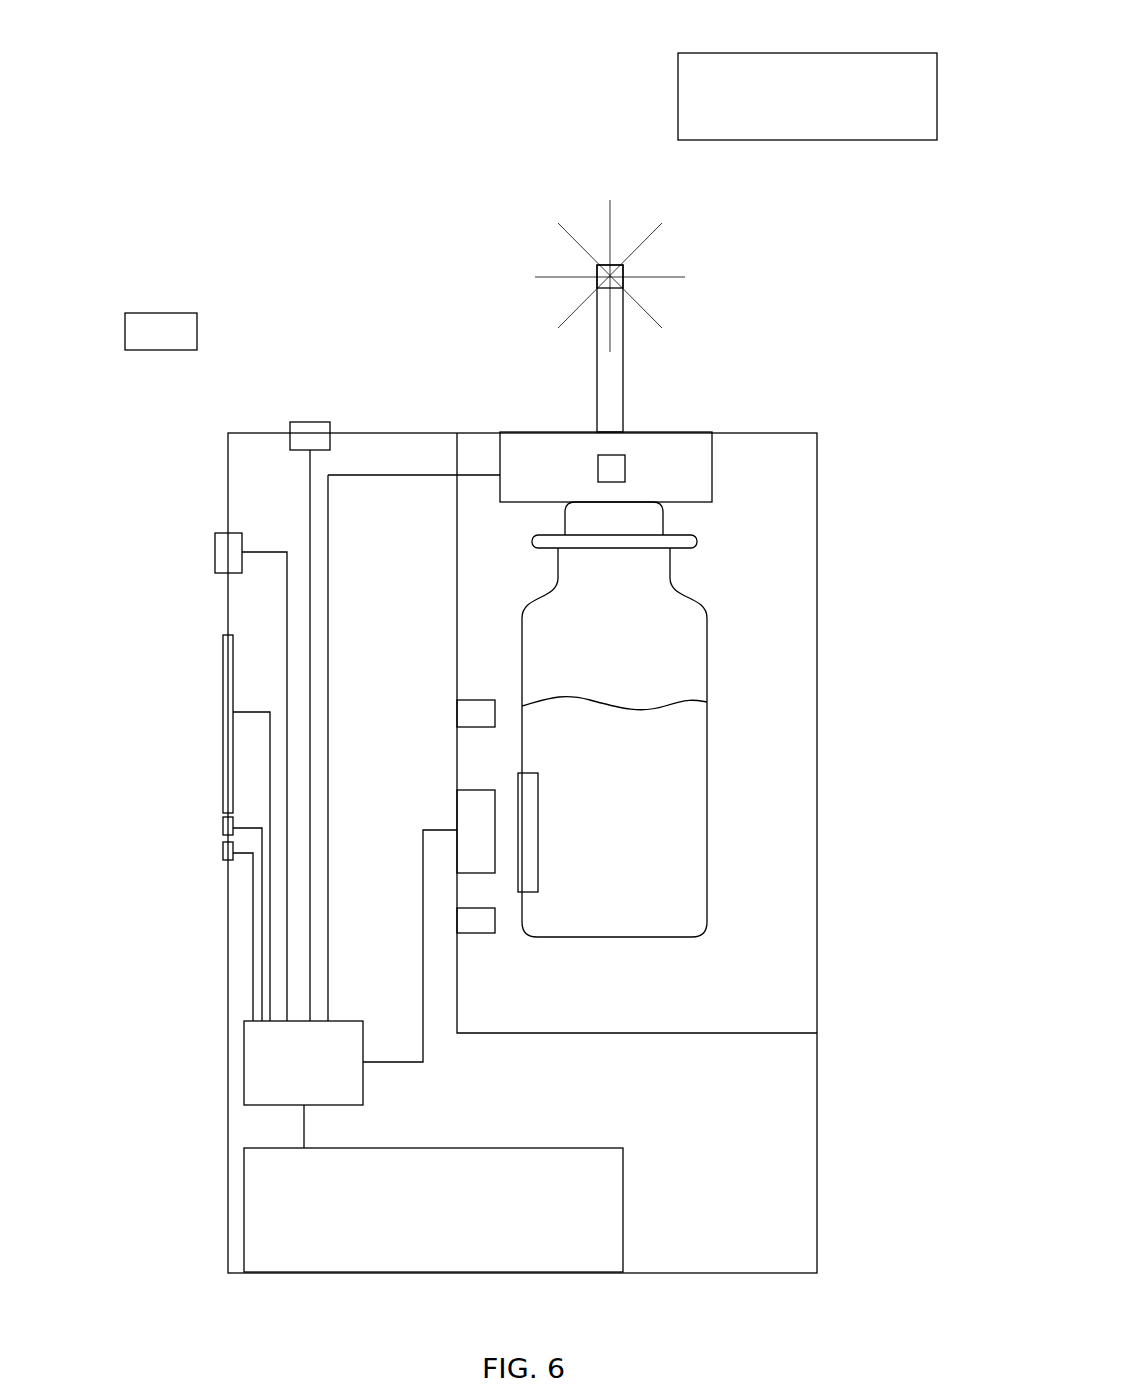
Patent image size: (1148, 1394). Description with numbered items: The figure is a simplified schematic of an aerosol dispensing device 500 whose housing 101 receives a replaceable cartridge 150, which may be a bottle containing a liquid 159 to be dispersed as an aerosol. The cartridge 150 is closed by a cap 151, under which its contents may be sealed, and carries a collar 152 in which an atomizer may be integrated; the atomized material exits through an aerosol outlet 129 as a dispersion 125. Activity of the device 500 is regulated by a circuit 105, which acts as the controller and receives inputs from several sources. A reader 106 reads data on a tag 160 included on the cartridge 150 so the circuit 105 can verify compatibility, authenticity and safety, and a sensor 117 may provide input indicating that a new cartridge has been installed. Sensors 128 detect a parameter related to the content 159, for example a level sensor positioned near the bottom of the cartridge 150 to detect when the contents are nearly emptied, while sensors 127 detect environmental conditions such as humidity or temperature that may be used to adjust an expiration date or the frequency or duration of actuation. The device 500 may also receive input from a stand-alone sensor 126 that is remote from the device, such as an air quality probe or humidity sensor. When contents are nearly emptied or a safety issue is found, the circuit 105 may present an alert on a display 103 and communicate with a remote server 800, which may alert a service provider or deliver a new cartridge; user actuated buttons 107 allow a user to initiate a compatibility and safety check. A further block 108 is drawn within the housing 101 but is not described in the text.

The remote server 800 is at (735, 53).
The stand-alone sensor 126 is at (156, 313).
The aerosol dispensing device 500 is at (473, 766).
The housing 101 is at (228, 500).
The sensors 127 is at (306, 422).
The display 103 is at (223, 702).
The user actuated buttons 107 is at (223, 852).
The circuit 105 is at (363, 1085).
The power supply 108 is at (623, 1206).
The reader 106 is at (457, 800).
The sensors 128 is at (457, 712).
The cap 151 is at (668, 460).
The sensor 117 is at (595, 468).
The aerosol outlet 129 is at (625, 316).
The dispersion 125 is at (682, 248).
The collar 152 is at (663, 522).
The cartridge 150 is at (707, 727).
The liquid 159 is at (636, 773).
The tag 160 is at (538, 870).